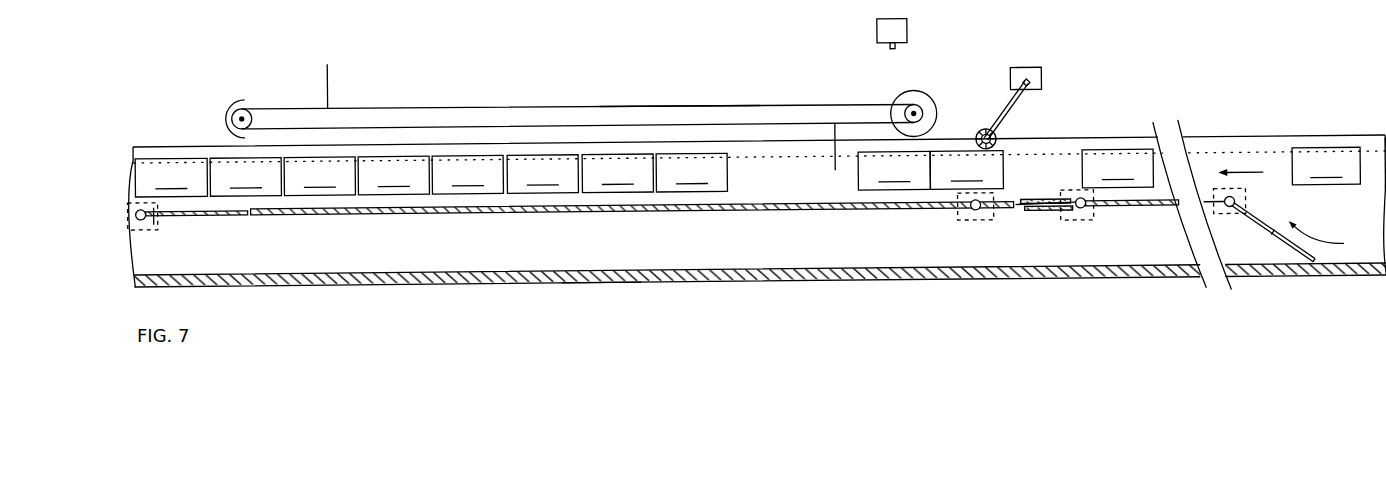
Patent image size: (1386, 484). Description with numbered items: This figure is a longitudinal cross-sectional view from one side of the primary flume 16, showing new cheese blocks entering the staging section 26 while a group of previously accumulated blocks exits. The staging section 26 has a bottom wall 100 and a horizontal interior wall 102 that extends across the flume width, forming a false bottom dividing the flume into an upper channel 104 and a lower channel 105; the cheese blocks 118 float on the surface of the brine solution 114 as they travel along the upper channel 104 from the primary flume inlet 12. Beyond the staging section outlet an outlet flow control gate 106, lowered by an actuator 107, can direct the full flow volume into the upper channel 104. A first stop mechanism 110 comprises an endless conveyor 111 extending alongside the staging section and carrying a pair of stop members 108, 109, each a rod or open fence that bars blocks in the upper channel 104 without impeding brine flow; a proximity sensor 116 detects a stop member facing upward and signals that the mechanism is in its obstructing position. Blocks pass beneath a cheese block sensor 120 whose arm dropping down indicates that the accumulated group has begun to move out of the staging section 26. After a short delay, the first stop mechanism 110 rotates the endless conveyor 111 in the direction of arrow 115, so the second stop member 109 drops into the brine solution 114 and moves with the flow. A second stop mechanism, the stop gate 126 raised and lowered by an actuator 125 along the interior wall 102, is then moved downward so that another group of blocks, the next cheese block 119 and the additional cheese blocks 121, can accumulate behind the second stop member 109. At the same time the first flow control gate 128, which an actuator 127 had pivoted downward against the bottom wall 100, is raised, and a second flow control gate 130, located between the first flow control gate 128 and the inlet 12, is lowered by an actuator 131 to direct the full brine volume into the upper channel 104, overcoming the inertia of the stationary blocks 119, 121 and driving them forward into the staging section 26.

The primary flume inlet 12 is at (1382, 147).
The primary flume 16 is at (170, 144).
The staging section 26 is at (597, 294).
The bottom wall 100 is at (440, 287).
The horizontal interior wall 102 is at (538, 216).
The upper channel 104 is at (777, 196).
The lower channel 105 is at (777, 257).
The outlet flow control gate 106 is at (228, 219).
The actuator 107 is at (147, 231).
The stop member 108 is at (329, 92).
The second stop member 109 is at (835, 154).
The first stop mechanism 110 is at (537, 106).
The endless conveyor 111 is at (688, 111).
The brine solution 114 is at (1243, 163).
The arrow 115 is at (248, 96).
The proximity sensor 116 is at (879, 47).
The cheese blocks 118 is at (431, 175).
The next cheese block 119 is at (894, 170).
The cheese block sensor 120 is at (1032, 77).
The additional cheese blocks 121 is at (1145, 168).
The actuator 125 is at (1084, 229).
The stop gate 126 is at (1042, 209).
The actuator 127 is at (960, 229).
The first flow control gate 128 is at (1042, 221).
The second flow control gate 130 is at (1278, 246).
The actuator 131 is at (1245, 203).